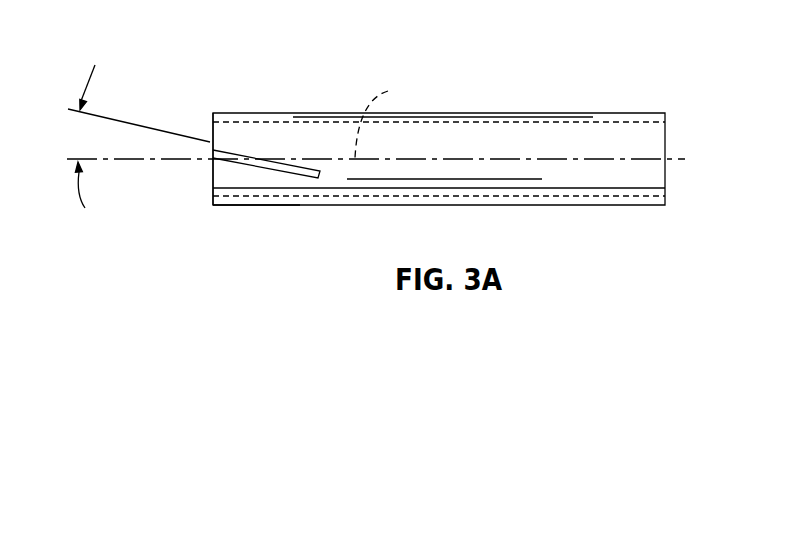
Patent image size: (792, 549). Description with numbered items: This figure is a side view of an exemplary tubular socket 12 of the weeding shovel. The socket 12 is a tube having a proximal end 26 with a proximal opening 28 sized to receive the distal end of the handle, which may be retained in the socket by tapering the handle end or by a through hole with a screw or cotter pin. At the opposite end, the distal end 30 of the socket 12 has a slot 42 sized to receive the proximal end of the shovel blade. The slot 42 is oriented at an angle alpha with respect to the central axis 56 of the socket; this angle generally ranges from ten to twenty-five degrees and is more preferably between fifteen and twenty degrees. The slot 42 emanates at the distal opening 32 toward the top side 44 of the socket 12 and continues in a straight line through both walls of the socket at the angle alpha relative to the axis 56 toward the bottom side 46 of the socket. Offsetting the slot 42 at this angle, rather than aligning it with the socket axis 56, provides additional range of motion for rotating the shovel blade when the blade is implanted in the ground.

The tubular socket 12 is at (212, 42).
The proximal end 26 is at (647, 205).
The proximal opening 28 is at (667, 140).
The distal end 30 is at (245, 205).
The distal opening 32 is at (205, 180).
The slot 42 is at (240, 151).
The top side 44 is at (233, 113).
The bottom side 46 is at (378, 207).
The central axis 56 is at (391, 119).